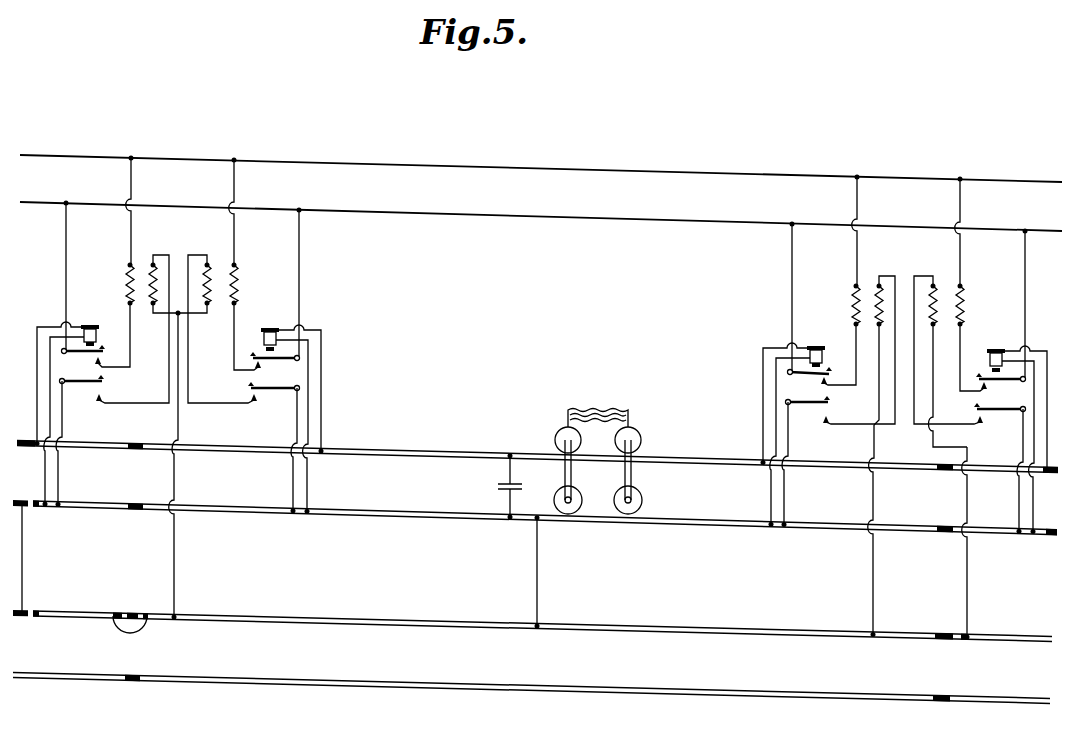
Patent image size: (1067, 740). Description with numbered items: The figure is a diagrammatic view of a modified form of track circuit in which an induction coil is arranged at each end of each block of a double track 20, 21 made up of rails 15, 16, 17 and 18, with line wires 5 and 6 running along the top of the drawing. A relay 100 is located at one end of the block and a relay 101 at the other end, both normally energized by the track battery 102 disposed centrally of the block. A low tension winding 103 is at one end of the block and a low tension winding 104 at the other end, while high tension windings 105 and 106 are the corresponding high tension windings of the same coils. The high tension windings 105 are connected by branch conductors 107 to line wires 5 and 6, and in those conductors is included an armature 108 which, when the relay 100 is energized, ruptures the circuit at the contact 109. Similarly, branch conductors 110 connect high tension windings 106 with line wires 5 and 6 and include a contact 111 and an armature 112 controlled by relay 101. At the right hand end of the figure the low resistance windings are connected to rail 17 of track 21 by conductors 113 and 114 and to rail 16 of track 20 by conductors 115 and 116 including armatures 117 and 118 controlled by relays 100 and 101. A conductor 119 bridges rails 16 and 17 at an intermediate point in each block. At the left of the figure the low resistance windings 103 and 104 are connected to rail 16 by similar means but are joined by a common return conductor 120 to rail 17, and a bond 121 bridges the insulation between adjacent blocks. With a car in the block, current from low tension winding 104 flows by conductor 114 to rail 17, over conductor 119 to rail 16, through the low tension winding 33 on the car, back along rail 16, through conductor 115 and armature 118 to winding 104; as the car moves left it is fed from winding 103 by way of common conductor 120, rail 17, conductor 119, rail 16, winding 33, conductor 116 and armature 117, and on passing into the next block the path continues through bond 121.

The line wire 5 is at (469, 166).
The line wire 6 is at (478, 214).
The rail 15 is at (420, 453).
The rail 16 is at (361, 508).
The rail 17 is at (70, 610).
The rail 18 is at (402, 688).
The track 20 is at (432, 484).
The track 21 is at (467, 656).
The low tension winding 33 is at (598, 450).
The relay 100 is at (268, 327).
The relay 101 is at (89, 325).
The track battery 102 is at (508, 470).
The low tension winding 103 is at (207, 262).
The low tension winding 104 is at (153, 262).
The high tension winding 105 is at (238, 290).
The high tension winding 106 is at (125, 284).
The branch conductor 107 is at (300, 242).
The armature 108 is at (262, 363).
The contact 109 is at (250, 368).
The branch conductor 110 is at (130, 237).
The contact 111 is at (110, 360).
The armature 112 is at (442, 370).
The conductor 113 is at (968, 580).
The conductor 114 is at (873, 578).
The conductor 115 is at (118, 404).
The conductor 116 is at (292, 423).
The armature 117 is at (637, 458).
The armature 118 is at (443, 451).
The conductor 119 is at (24, 553).
The common return conductor 120 is at (176, 566).
The bond 121 is at (129, 633).